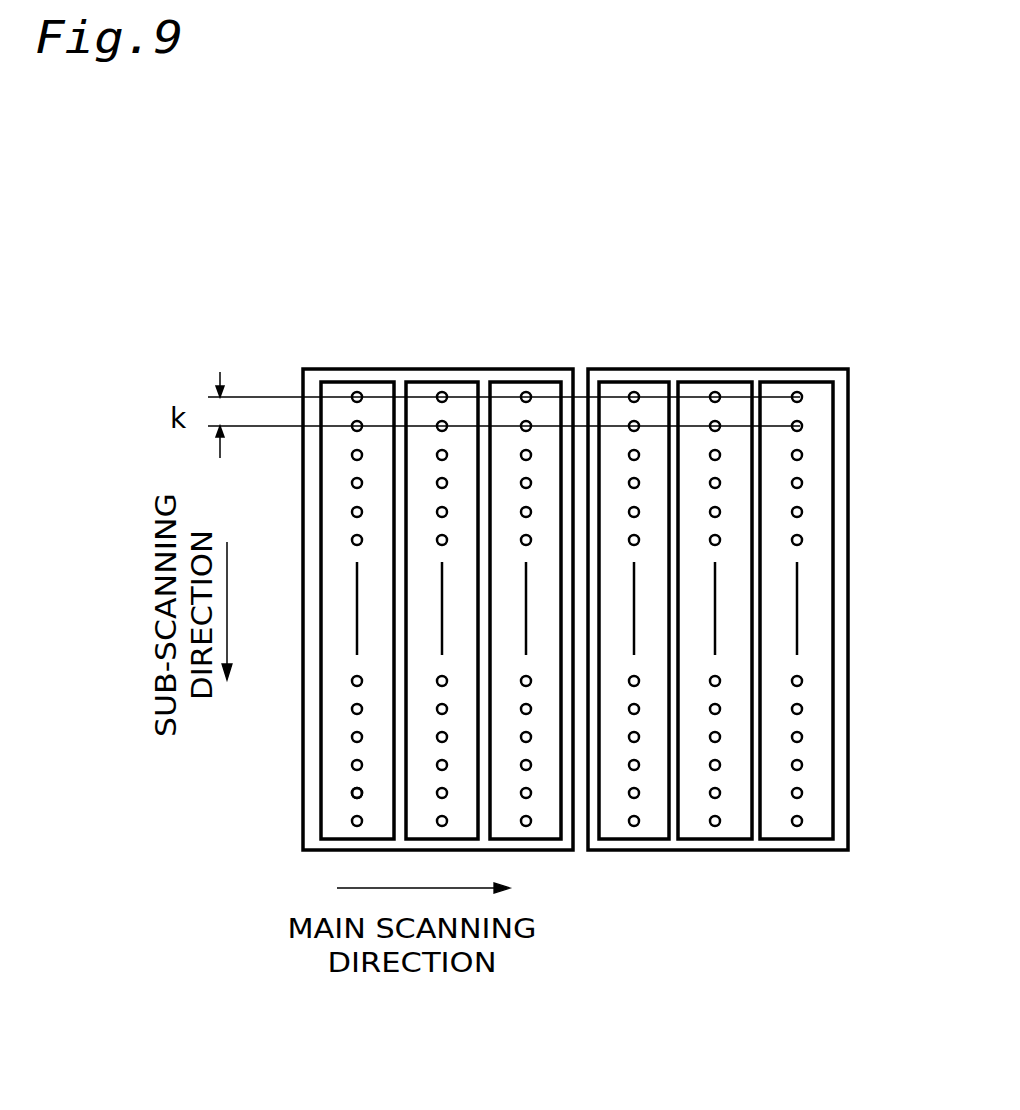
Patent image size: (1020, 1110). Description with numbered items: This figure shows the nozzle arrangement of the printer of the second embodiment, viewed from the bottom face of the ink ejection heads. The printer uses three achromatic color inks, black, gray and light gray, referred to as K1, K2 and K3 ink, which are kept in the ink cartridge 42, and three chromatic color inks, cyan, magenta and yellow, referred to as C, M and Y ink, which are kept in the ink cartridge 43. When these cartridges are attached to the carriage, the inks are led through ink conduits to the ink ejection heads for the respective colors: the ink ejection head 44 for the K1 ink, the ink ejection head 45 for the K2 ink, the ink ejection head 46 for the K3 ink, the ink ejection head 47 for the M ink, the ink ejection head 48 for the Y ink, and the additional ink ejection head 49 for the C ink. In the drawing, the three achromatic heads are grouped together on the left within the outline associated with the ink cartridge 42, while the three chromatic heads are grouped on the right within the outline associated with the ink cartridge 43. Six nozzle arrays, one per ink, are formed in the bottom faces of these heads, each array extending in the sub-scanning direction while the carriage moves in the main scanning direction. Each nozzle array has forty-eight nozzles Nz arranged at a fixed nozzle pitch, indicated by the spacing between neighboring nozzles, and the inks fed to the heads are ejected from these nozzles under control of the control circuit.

The ink cartridge 42 is at (488, 373).
The ink cartridge 43 is at (697, 373).
The ink ejection head 44 is at (348, 380).
The ink ejection head 45 is at (420, 380).
The ink ejection head 46 is at (528, 380).
The ink ejection head 47 is at (730, 380).
The ink ejection head 48 is at (797, 380).
The ink ejection head 49 is at (630, 380).
The nozzle Nz is at (352, 796).